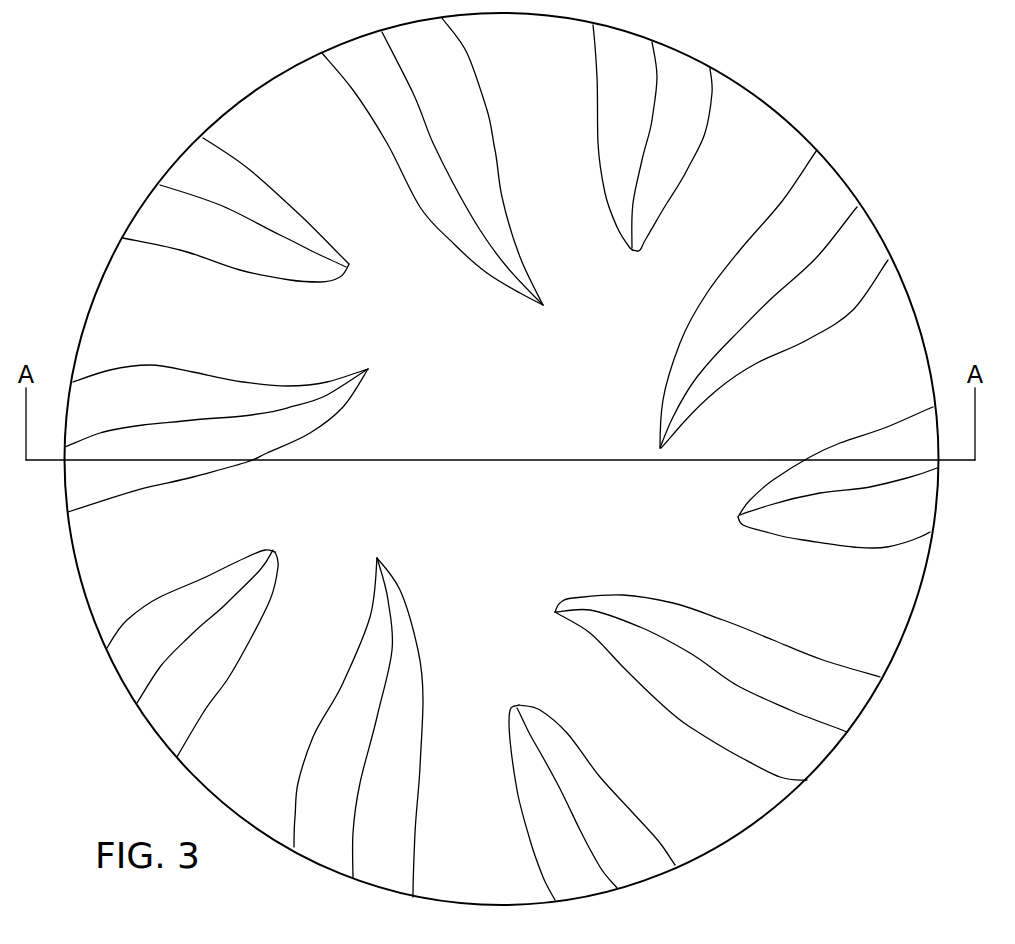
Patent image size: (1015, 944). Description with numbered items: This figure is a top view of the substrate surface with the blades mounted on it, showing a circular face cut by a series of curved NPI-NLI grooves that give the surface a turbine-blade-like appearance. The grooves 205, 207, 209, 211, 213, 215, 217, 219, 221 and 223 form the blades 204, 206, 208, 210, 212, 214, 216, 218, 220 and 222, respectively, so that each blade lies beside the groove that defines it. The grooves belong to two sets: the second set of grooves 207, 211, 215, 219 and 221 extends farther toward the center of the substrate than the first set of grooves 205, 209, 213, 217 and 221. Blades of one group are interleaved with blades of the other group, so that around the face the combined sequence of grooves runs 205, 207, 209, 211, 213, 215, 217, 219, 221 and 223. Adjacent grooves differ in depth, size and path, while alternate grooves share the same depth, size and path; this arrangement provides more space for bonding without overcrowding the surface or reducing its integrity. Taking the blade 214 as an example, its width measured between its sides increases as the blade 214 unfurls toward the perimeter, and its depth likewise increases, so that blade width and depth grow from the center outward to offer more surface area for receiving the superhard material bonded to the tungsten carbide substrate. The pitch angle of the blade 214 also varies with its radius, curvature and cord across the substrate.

The blade 204 is at (311, 184).
The groove 205 is at (201, 250).
The blade 206 is at (186, 355).
The groove 207 is at (131, 405).
The blade 208 is at (154, 565).
The groove 209 is at (181, 684).
The blade 210 is at (239, 760).
The groove 211 is at (309, 792).
The blade 212 is at (442, 839).
The groove 213 is at (589, 837).
The blade 214 is at (672, 809).
The groove 215 is at (739, 739).
The blade 216 is at (812, 635).
The groove 217 is at (841, 532).
The blade 218 is at (819, 415).
The groove 219 is at (787, 317).
The blade 220 is at (696, 235).
The groove 221 is at (602, 114).
The blade 222 is at (529, 185).
The groove 223 is at (374, 114).